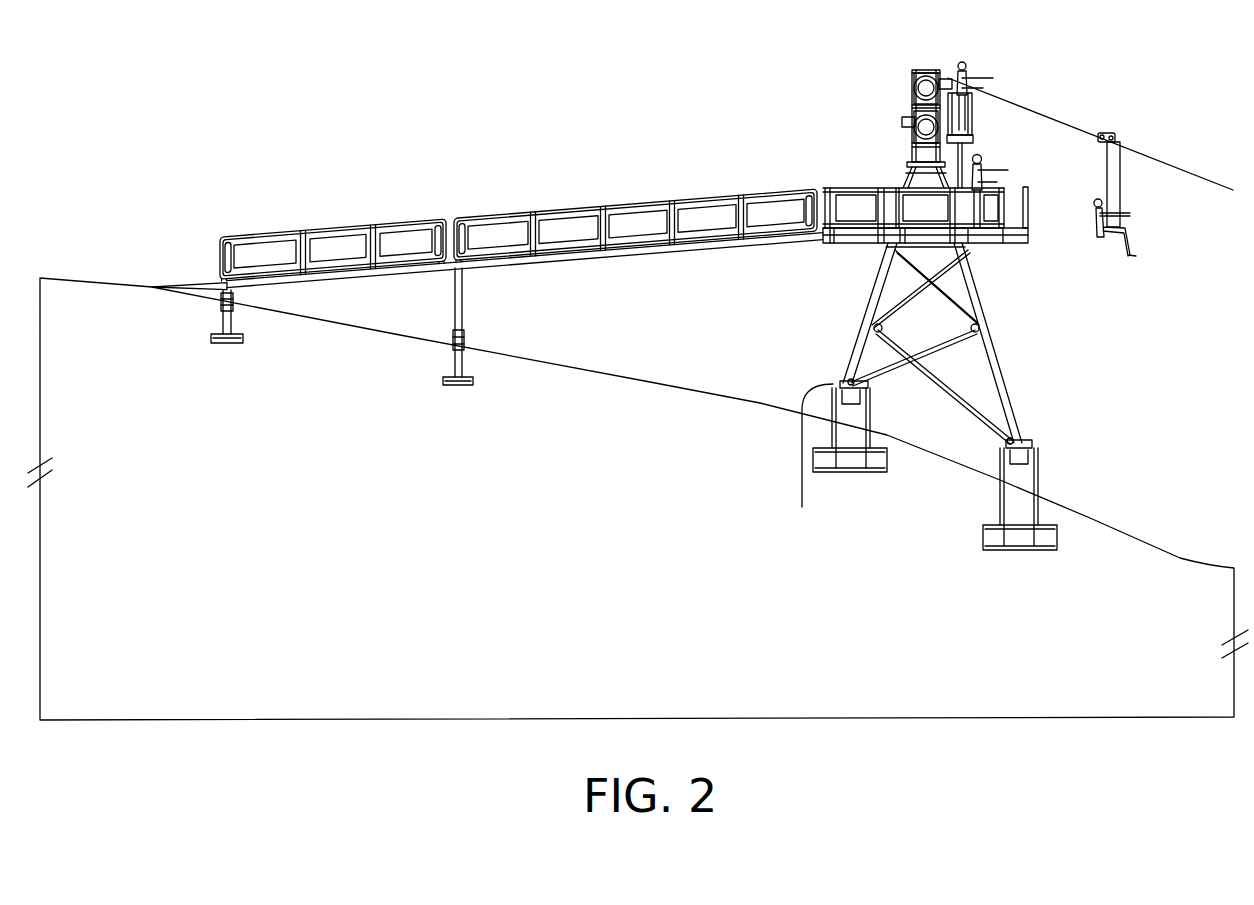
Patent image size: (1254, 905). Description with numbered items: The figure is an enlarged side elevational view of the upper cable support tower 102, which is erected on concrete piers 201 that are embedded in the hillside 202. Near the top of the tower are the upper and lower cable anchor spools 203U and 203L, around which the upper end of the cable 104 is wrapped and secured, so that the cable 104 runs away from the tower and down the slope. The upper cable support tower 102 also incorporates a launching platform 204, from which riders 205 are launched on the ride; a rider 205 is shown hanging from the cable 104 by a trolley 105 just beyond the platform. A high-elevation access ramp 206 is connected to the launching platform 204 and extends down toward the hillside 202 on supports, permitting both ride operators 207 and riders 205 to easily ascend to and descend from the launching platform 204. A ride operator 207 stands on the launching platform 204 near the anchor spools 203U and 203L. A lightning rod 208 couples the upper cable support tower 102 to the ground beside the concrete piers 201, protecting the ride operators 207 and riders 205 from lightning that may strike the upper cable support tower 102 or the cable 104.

The upper cable support tower 102 is at (993, 353).
The cable 104 is at (1035, 106).
The trolley 105 is at (1110, 131).
The concrete piers 201 is at (1018, 510).
The hillside 202 is at (1072, 525).
The upper cable anchor spool 203U is at (926, 90).
The lower cable anchor spool 203L is at (926, 128).
The launching platform 204 is at (990, 244).
The riders 205 is at (1102, 252).
The high-elevation access ramp 206 is at (660, 252).
The ride operators 207 is at (992, 160).
The lightning rod 208 is at (803, 445).